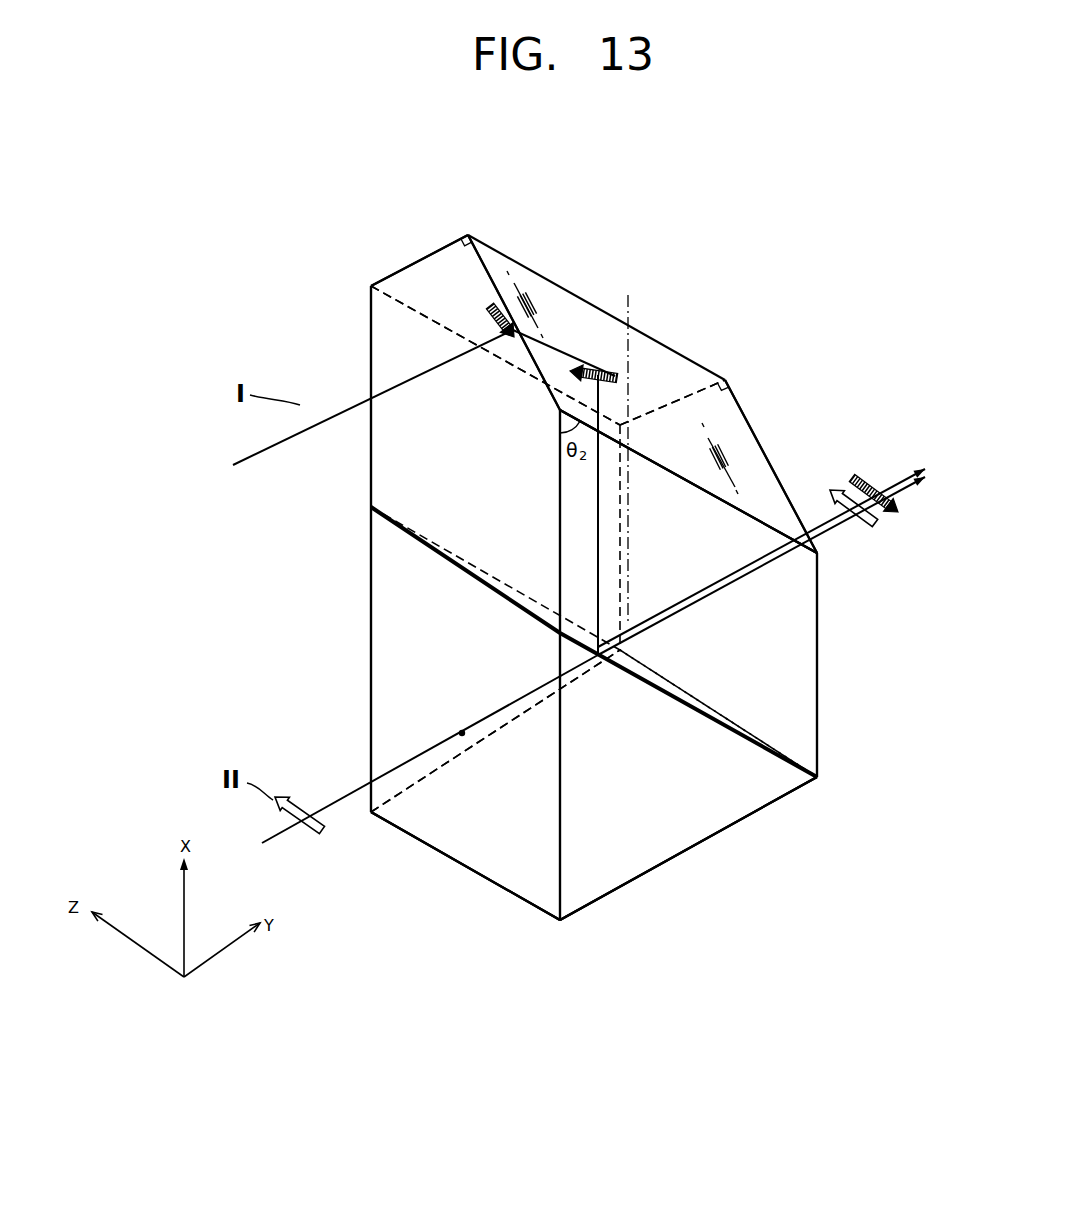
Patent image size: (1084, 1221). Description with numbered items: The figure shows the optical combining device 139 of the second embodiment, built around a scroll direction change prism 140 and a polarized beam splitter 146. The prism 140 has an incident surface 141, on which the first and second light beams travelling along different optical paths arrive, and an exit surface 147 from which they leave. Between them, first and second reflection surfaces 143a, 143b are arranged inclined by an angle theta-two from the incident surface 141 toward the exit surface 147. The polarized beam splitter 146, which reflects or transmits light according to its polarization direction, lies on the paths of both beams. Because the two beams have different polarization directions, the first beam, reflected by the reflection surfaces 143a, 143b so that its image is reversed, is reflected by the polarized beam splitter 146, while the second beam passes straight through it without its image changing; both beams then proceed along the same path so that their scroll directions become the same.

The optical combining device 139 is at (712, 915).
The scroll direction change prism 140 is at (553, 235).
The incident surface 141 is at (385, 352).
The first reflection surface 143a is at (417, 268).
The second reflection surface 143b is at (757, 447).
The polarized beam splitter 146 is at (650, 687).
The exit surface 147 is at (808, 655).